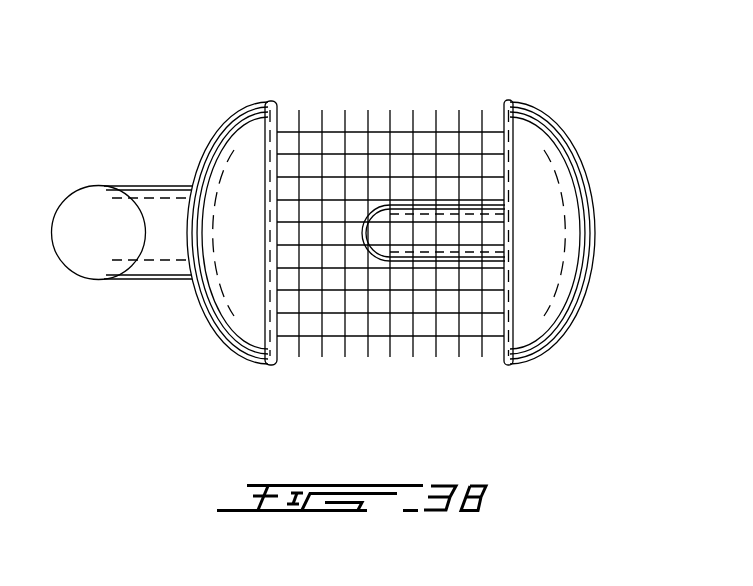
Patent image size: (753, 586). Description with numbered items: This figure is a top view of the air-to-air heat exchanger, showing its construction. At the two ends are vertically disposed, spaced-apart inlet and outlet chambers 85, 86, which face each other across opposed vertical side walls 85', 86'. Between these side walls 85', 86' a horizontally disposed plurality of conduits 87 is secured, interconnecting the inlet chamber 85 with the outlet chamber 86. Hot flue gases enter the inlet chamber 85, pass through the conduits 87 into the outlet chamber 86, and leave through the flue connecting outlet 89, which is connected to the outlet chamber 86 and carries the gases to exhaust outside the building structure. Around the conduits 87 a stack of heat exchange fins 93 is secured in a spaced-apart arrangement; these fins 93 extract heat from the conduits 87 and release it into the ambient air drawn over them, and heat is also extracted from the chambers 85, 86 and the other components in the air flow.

The inlet chamber 85 is at (586, 233).
The vertical side wall of inlet chamber 85' is at (490, 199).
The outlet chamber 86 is at (214, 203).
The vertical side wall of outlet chamber 86' is at (295, 264).
The conduits 87 is at (333, 188).
The flue connecting outlet 89 is at (98, 218).
The heat exchange fins 93 is at (458, 348).